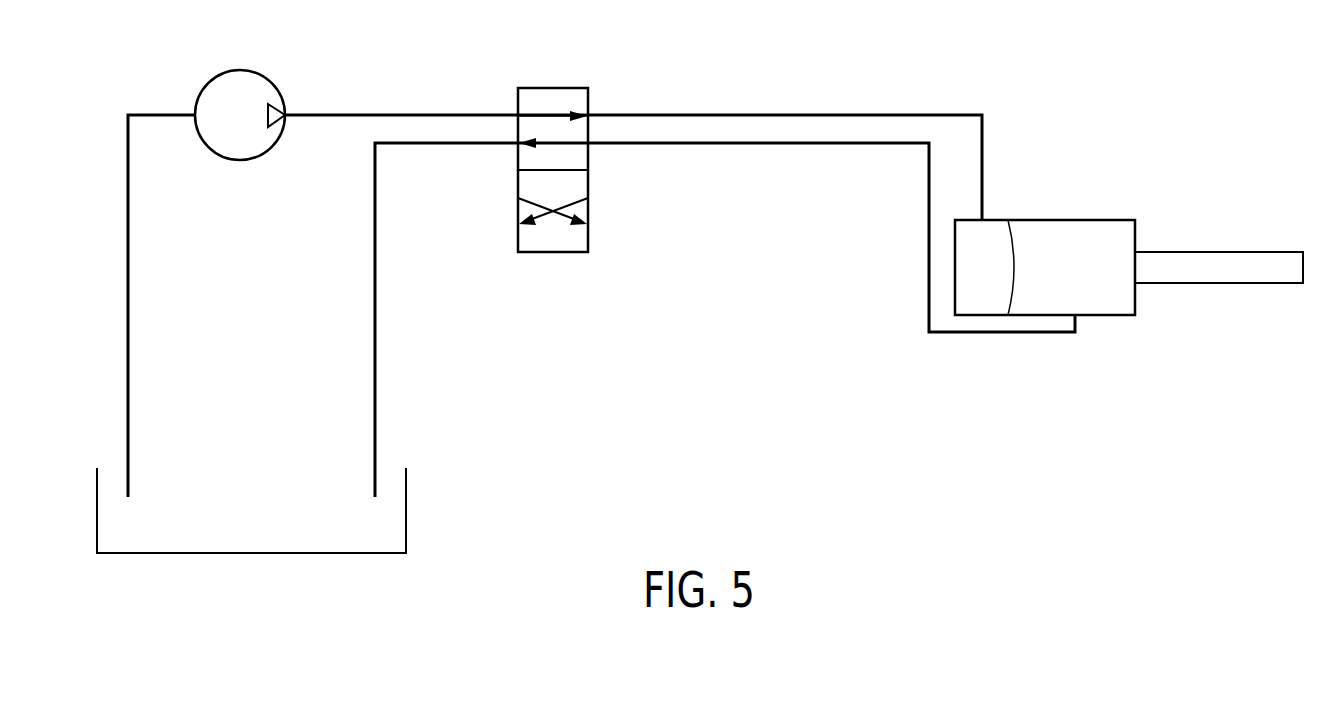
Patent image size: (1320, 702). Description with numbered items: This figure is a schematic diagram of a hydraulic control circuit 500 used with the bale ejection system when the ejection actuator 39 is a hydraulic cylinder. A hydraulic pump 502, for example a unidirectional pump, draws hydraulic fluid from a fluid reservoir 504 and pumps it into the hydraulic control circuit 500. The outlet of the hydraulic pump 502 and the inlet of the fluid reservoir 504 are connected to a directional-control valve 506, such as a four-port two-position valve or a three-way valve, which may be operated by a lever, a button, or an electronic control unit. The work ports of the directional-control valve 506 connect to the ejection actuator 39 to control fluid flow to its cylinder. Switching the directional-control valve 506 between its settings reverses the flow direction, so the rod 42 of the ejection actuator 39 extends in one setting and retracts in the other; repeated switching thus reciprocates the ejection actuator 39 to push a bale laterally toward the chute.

The hydraulic control circuit 500 is at (1093, 41).
The hydraulic pump 502 is at (217, 73).
The fluid reservoir 504 is at (252, 554).
The directional-control valve 506 is at (555, 88).
The ejection actuator 39 is at (1045, 218).
The rod 42 is at (1220, 250).